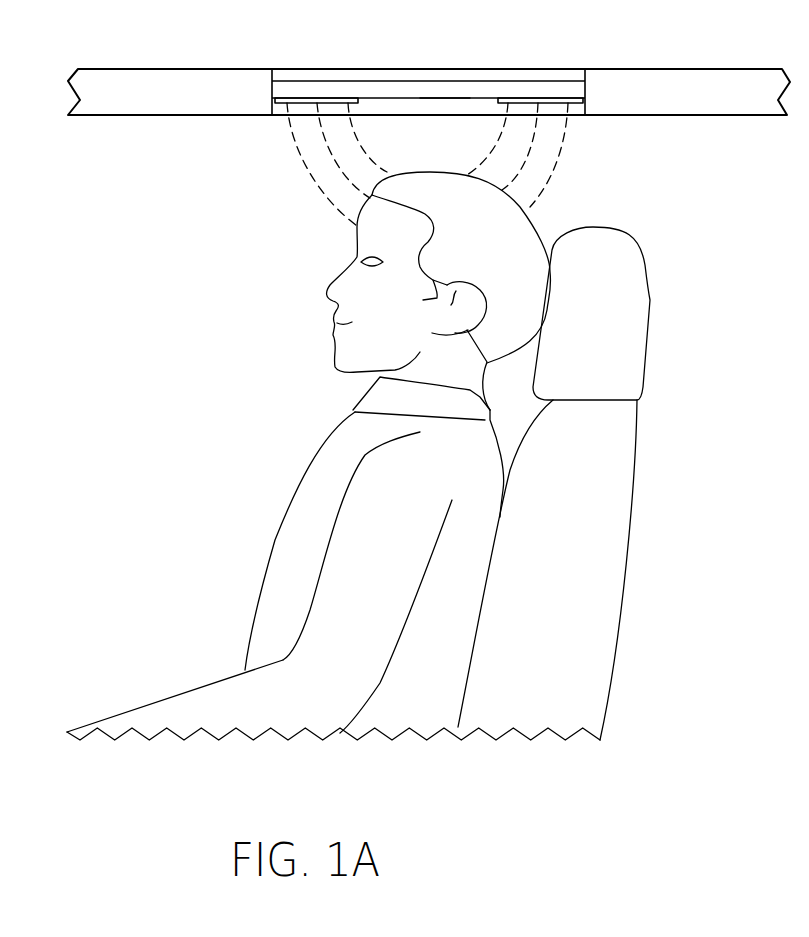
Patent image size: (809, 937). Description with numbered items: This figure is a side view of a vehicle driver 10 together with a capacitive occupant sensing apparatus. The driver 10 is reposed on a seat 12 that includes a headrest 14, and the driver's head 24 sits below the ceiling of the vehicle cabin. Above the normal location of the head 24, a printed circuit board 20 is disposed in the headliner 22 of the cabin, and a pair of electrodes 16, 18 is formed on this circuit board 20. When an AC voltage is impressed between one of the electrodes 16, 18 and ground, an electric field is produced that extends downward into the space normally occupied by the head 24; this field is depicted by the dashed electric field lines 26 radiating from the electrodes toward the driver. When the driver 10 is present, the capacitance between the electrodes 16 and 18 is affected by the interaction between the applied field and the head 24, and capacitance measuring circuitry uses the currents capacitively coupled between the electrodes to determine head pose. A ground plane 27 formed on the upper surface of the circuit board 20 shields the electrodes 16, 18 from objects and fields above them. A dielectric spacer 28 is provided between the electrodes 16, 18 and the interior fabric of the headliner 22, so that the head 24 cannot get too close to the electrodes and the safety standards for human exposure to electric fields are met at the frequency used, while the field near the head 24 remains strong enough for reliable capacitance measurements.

The vehicle driver 10 is at (287, 520).
The seat 12 is at (625, 518).
The headrest 14 is at (643, 322).
The electrode 16 is at (325, 95).
The electrode 18 is at (525, 97).
The printed circuit board 20 is at (408, 87).
The headliner 22 is at (698, 115).
The driver's head 24 is at (530, 225).
The electric field lines 26 is at (303, 167).
The ground plane 27 is at (570, 68).
The dielectric spacer 28 is at (443, 110).